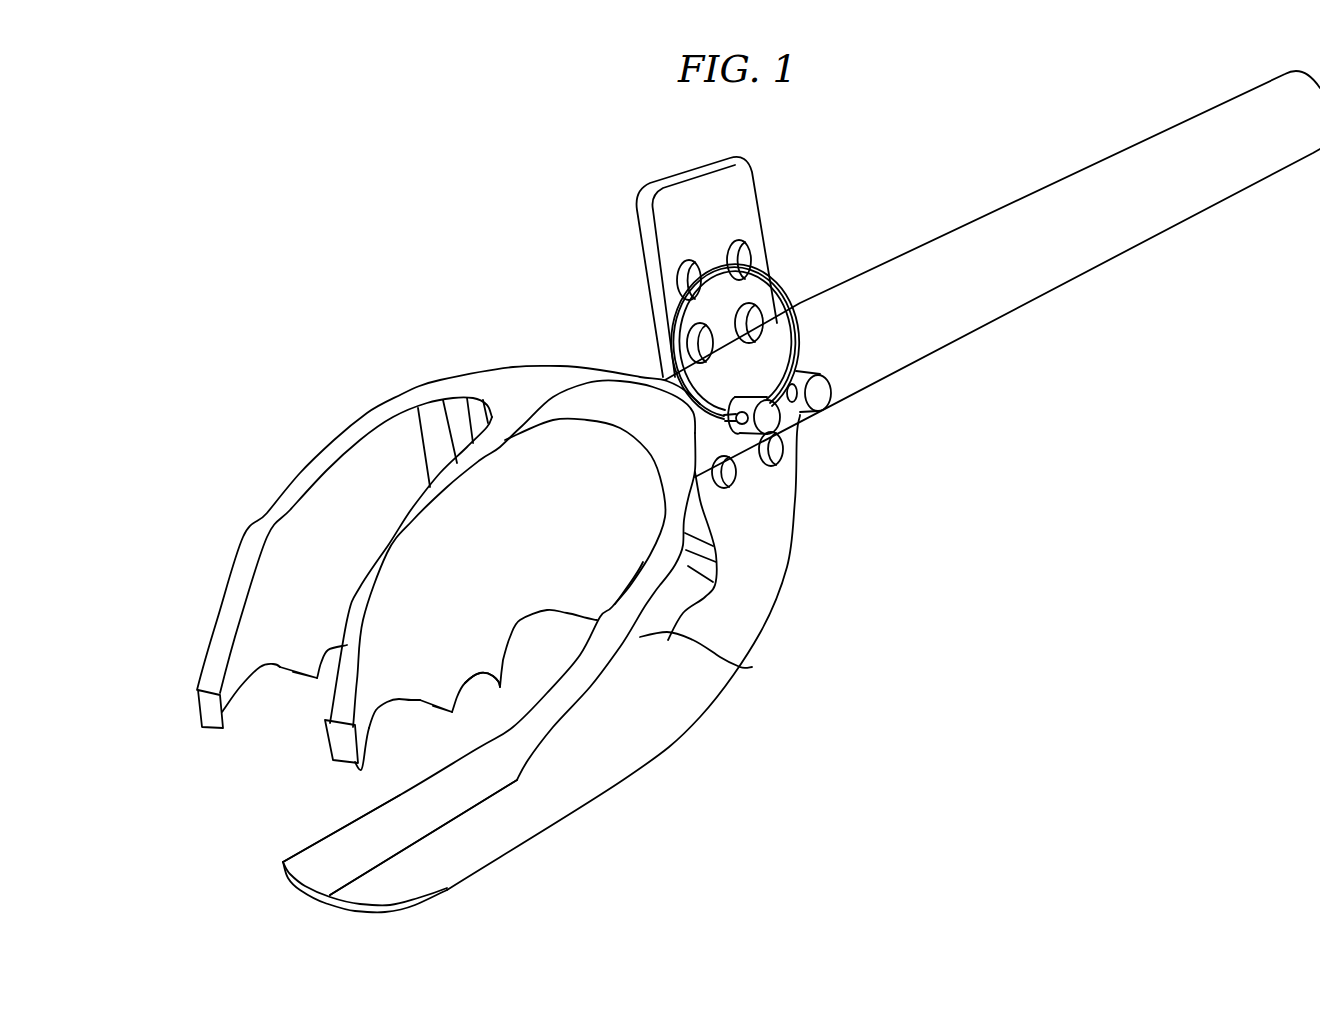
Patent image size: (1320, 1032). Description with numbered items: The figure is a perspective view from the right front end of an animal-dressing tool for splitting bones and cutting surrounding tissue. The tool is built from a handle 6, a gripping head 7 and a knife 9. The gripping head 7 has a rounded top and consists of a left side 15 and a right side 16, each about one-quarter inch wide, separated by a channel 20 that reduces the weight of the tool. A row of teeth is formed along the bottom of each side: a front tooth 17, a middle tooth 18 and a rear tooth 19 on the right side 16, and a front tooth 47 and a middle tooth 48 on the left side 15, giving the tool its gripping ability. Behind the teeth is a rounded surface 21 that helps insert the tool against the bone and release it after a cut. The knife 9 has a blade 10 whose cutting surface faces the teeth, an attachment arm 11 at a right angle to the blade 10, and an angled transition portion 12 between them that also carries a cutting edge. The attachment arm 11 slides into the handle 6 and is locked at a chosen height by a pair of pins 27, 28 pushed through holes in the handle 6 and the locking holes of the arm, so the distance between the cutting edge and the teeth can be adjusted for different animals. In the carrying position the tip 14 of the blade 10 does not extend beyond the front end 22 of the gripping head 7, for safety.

The handle 6 is at (1227, 193).
The gripping head 7 is at (500, 360).
The knife 9 is at (765, 732).
The blade 10 is at (510, 852).
The attachment arm 11 is at (743, 160).
The transition portion 12 is at (752, 667).
The tip 14 is at (283, 864).
The left side 15 is at (263, 520).
The right side 16 is at (393, 542).
The front tooth 17 is at (360, 766).
The middle tooth 18 is at (452, 712).
The rear tooth 19 is at (497, 684).
The channel 20 is at (397, 437).
The rounded surface 21 is at (598, 620).
The front end 22 is at (210, 705).
The pin 27 is at (768, 418).
The pin 28 is at (822, 393).
The front tooth 47 is at (224, 732).
The middle tooth 48 is at (318, 677).